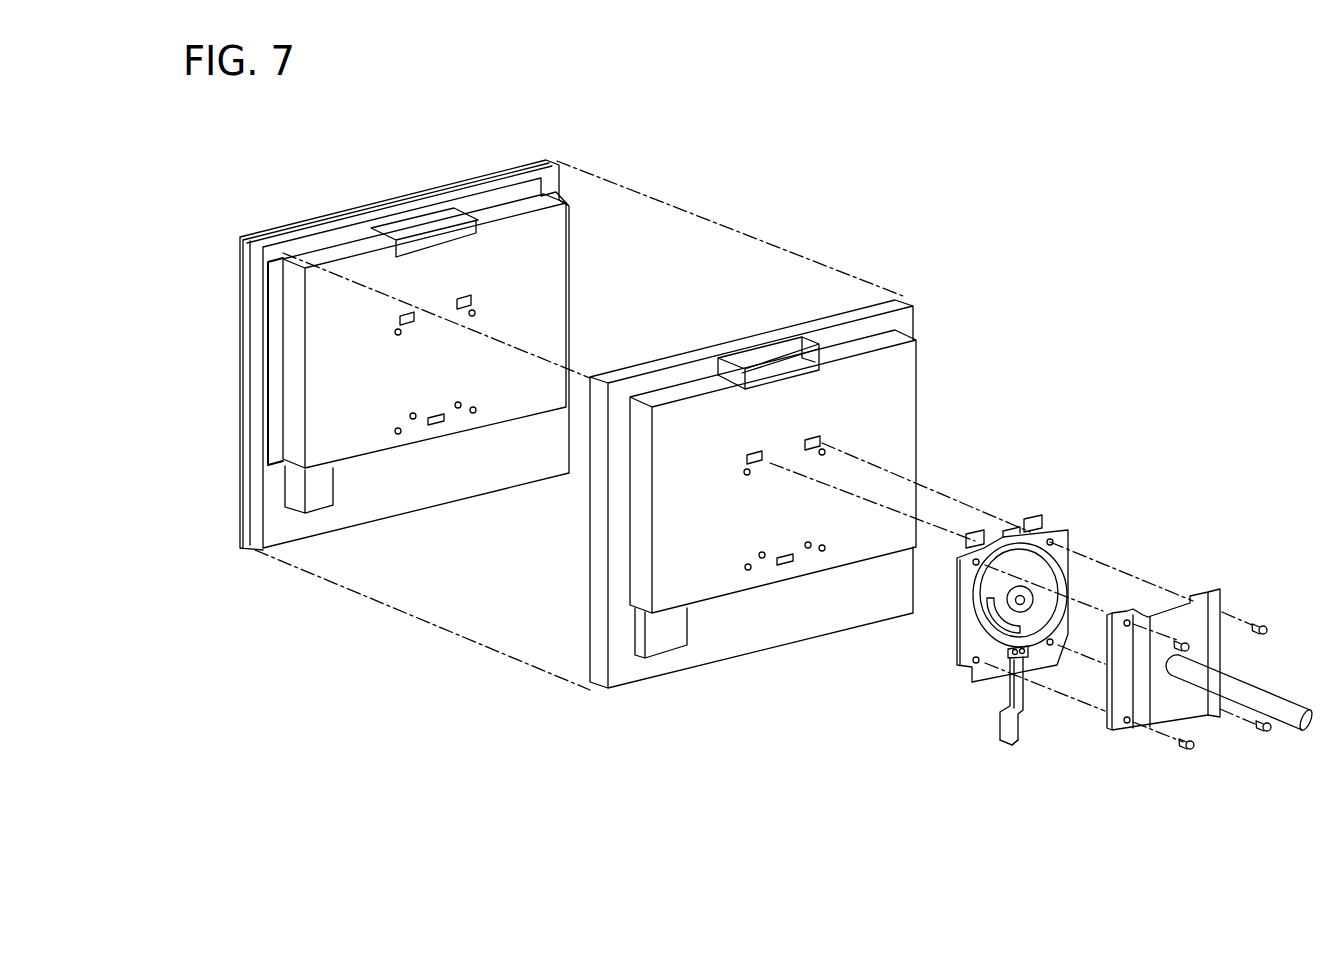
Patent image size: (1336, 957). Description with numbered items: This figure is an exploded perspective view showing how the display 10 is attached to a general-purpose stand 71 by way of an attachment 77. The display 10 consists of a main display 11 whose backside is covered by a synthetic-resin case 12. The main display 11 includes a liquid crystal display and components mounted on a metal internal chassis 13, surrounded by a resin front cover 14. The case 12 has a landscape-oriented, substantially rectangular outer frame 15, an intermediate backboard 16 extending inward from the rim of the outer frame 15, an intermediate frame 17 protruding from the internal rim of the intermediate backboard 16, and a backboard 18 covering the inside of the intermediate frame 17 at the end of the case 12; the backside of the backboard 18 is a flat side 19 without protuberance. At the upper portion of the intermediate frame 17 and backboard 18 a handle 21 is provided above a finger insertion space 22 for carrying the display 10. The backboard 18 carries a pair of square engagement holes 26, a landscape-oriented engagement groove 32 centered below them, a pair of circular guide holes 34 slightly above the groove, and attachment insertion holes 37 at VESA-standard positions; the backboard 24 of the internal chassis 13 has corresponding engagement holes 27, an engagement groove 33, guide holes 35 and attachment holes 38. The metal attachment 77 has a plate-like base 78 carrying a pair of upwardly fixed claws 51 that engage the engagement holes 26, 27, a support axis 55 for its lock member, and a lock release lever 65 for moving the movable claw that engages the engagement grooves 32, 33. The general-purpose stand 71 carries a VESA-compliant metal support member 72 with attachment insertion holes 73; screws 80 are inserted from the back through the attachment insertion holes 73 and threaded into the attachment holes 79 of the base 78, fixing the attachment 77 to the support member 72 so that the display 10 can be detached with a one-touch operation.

The display 10 is at (788, 107).
The main display 11 is at (565, 158).
The case 12 is at (907, 288).
The internal chassis 13 is at (292, 412).
The front cover 14 is at (240, 270).
The outer frame 15 is at (600, 623).
The intermediate backboard 16 is at (658, 663).
The intermediate frame 17 is at (640, 564).
The backboard 18 is at (903, 405).
The flat side 19 is at (907, 363).
The handle 21 is at (776, 352).
The finger insertion space 22 is at (790, 366).
The backboard of the internal chassis 24 is at (540, 242).
The engagement holes 26 is at (749, 455).
The engagement holes 27 is at (460, 298).
The engagement groove 32 is at (786, 566).
The engagement groove 33 is at (438, 426).
The guide holes 34 is at (764, 558).
The guide holes 35 is at (413, 419).
The attachment insertion holes 37 is at (746, 470).
The attachment holes 38 is at (476, 308).
The fixed claws 51 is at (972, 518).
The support axis 55 is at (1024, 598).
The lock release lever 65 is at (1018, 728).
The general-purpose stand 71 is at (1291, 694).
The support member 72 is at (1212, 580).
The attachment insertion holes 73 is at (1126, 627).
The attachment 77 is at (1057, 522).
The base 78 is at (990, 682).
The attachment holes 79 is at (1053, 541).
The screws 80 is at (1186, 642).